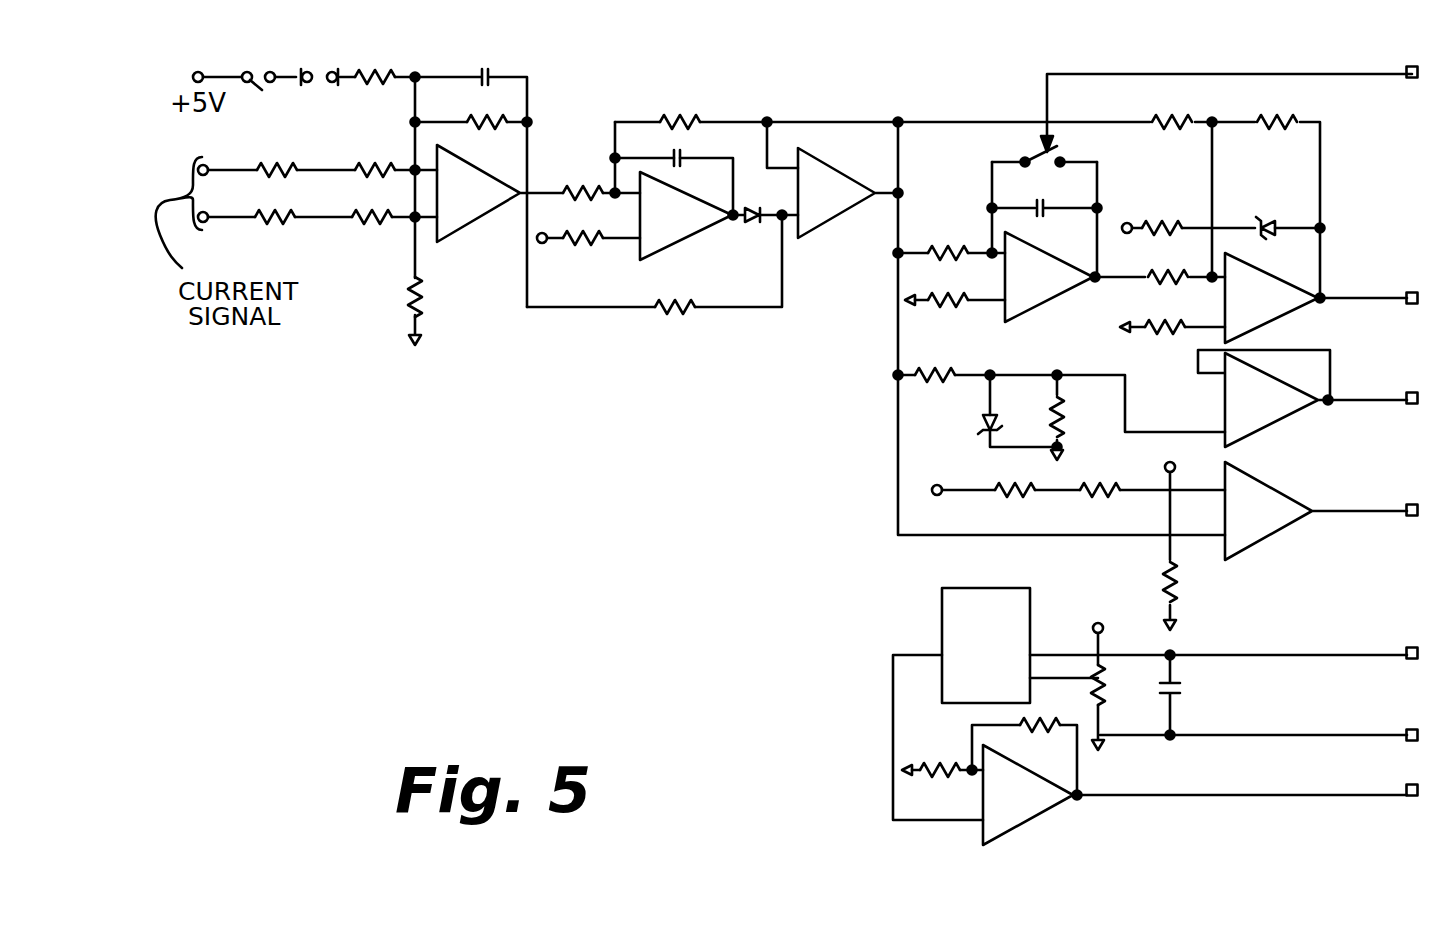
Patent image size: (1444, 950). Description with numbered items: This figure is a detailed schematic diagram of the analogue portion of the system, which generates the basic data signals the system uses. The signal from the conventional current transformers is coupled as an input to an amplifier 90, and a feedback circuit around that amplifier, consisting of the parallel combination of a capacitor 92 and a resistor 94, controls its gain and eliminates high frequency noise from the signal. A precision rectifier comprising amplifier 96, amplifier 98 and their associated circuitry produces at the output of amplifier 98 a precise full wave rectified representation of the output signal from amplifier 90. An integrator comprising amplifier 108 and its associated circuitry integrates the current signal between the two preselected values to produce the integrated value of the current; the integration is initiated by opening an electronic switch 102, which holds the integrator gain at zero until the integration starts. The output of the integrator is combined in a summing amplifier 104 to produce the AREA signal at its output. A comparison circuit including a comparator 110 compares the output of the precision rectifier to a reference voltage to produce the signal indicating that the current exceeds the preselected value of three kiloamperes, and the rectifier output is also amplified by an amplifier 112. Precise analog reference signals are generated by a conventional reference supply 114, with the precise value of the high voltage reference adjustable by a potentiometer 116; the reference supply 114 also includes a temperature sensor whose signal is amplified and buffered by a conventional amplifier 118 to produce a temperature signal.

The amplifier 90 is at (470, 205).
The capacitor 92 is at (497, 75).
The resistor 94 is at (522, 118).
The amplifier 96 is at (700, 220).
The amplifier 98 is at (832, 216).
The electronic switch 102 is at (1045, 152).
The summing amplifier 104 is at (1302, 282).
The amplifier 108 is at (1070, 280).
The comparator 110 is at (1297, 488).
The amplifier 112 is at (1290, 386).
The reference supply 114 is at (1008, 631).
The potentiometer 116 is at (1102, 656).
The amplifier 118 is at (1035, 815).